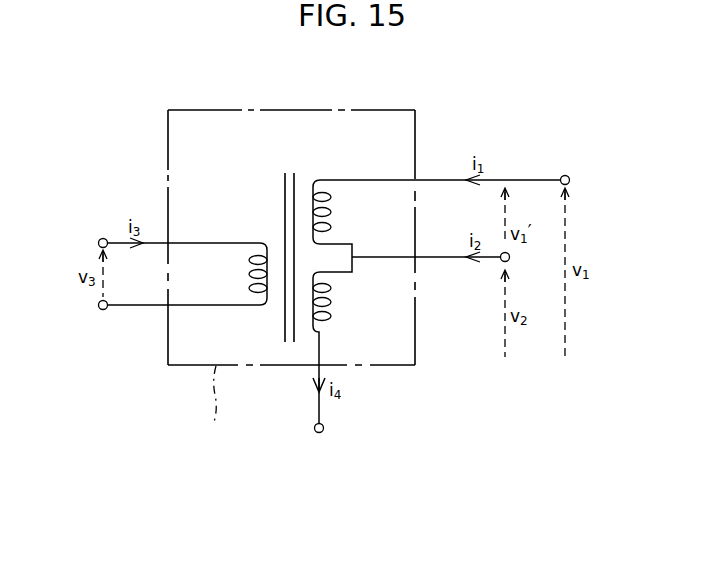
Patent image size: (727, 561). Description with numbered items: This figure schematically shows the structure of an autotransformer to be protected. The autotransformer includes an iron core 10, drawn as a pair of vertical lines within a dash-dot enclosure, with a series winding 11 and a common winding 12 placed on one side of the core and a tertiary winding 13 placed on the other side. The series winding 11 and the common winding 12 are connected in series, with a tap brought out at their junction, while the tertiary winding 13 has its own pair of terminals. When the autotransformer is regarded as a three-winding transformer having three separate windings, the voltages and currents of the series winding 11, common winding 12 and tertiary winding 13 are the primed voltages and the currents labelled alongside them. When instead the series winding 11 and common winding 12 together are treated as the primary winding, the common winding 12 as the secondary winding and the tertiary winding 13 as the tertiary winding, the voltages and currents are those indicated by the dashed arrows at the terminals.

The iron core 10 is at (287, 172).
The series winding 11 is at (331, 208).
The common winding 12 is at (330, 301).
The tertiary winding 13 is at (250, 275).